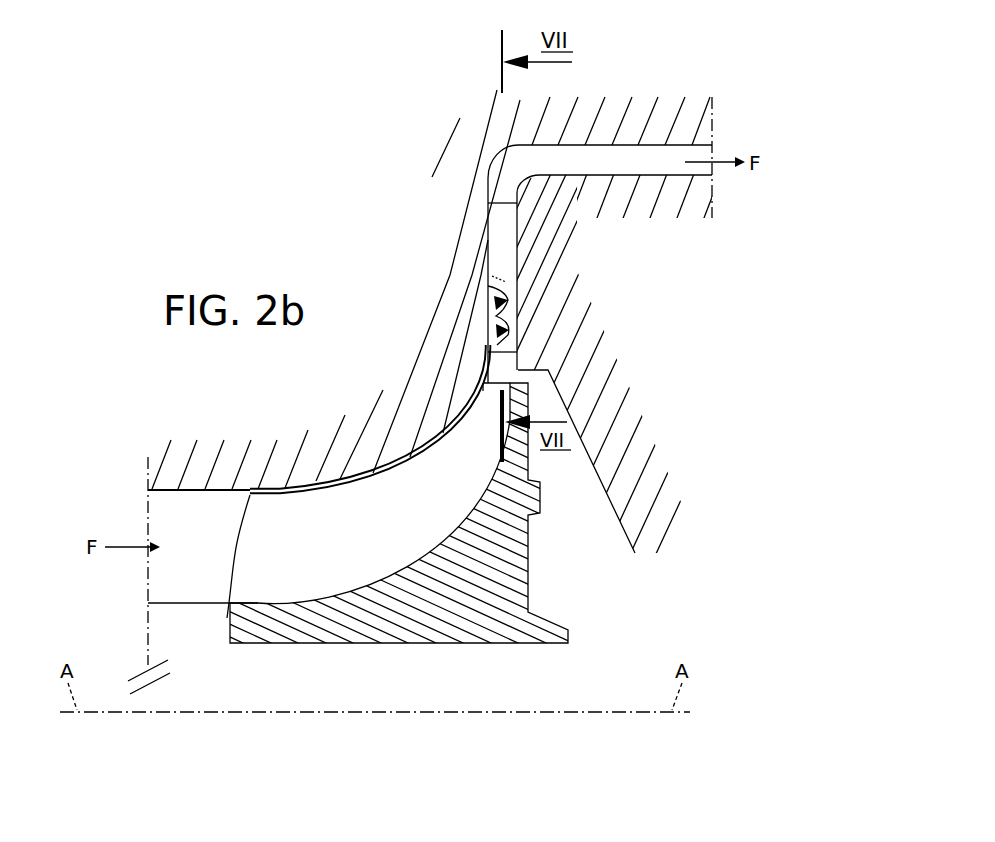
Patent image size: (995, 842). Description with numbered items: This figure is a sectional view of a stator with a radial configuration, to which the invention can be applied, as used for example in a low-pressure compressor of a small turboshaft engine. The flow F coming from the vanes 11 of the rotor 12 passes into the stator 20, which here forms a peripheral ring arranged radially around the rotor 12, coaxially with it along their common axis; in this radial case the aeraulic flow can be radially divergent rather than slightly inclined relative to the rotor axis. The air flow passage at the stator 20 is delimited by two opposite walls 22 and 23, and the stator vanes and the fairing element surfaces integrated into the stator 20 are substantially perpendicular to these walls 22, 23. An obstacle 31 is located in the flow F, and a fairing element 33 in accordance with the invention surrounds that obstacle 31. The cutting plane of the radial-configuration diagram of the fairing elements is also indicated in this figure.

The vanes 11 is at (260, 540).
The rotor 12 is at (497, 511).
The stator 20 is at (425, 351).
The wall 22 is at (498, 326).
The wall 23 is at (505, 292).
The obstacle 31 is at (480, 271).
The fairing element 33 is at (503, 230).